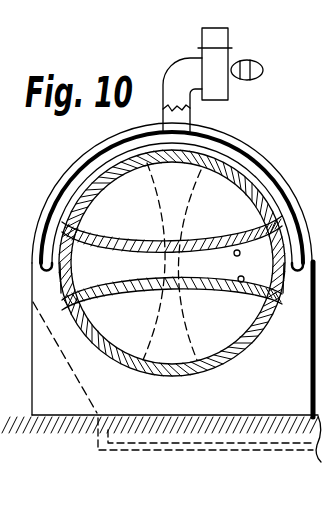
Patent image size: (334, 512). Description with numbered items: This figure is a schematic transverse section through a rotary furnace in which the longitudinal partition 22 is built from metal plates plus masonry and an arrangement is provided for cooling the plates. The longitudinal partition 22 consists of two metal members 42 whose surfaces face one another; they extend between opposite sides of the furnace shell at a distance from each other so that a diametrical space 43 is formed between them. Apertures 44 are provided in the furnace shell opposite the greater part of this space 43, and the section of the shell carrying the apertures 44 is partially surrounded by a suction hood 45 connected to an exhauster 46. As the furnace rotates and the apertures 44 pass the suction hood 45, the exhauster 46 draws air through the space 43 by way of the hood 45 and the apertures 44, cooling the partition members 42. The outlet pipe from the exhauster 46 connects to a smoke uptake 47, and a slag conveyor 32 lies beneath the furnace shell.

The longitudinal partition 22 is at (138, 291).
The slag conveyor 32 is at (285, 420).
The metal members 42 is at (237, 250).
The diametrical space 43 is at (101, 273).
The apertures 44 is at (60, 272).
The suction hood 45 is at (77, 181).
The exhauster 46 is at (217, 57).
The smoke uptake 47 is at (238, 170).